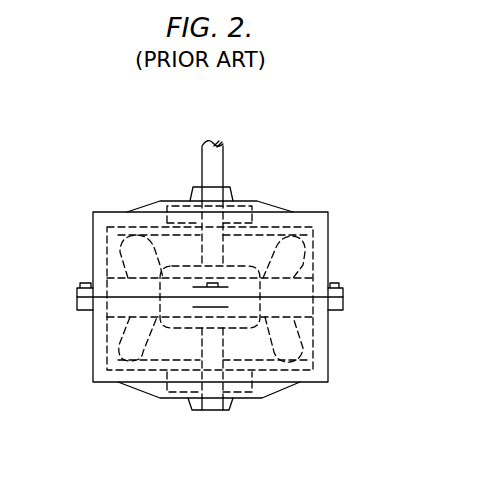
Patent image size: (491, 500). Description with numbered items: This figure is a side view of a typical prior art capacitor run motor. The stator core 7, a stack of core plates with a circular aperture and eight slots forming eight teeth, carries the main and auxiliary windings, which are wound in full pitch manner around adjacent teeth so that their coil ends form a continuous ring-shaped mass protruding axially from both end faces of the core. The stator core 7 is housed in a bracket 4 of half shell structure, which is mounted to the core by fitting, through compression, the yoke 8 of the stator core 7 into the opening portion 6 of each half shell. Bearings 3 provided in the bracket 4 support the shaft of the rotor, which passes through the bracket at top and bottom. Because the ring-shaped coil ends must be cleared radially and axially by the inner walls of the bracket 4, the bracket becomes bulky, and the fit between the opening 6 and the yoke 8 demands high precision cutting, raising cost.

The bearings 3 is at (247, 208).
The bracket 4 is at (327, 212).
The opening portion 6 is at (103, 284).
The stator core 7 is at (305, 285).
The yoke 8 is at (313, 312).